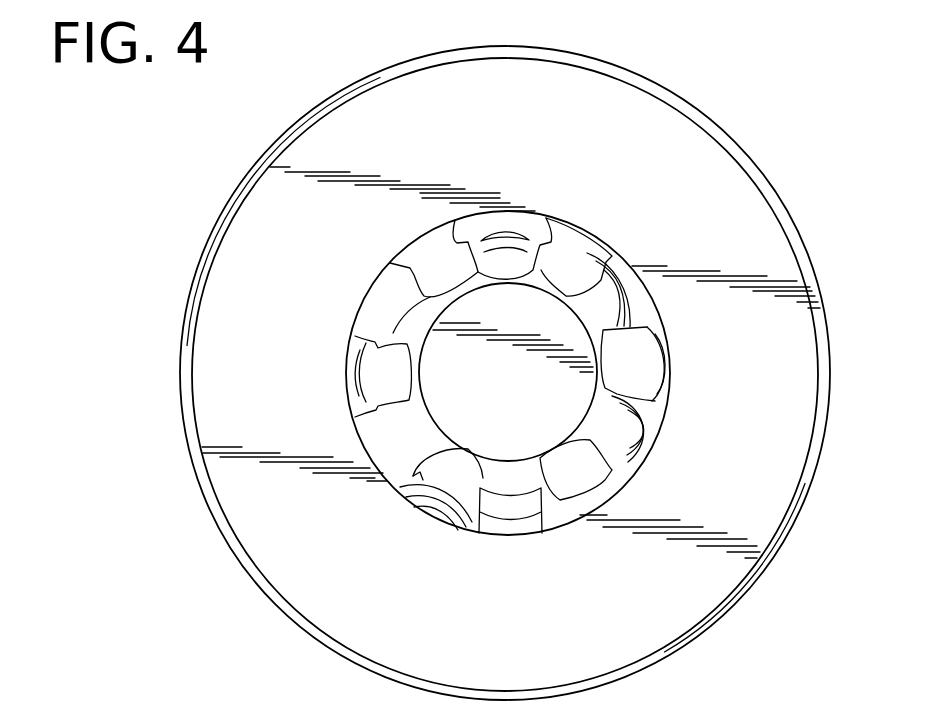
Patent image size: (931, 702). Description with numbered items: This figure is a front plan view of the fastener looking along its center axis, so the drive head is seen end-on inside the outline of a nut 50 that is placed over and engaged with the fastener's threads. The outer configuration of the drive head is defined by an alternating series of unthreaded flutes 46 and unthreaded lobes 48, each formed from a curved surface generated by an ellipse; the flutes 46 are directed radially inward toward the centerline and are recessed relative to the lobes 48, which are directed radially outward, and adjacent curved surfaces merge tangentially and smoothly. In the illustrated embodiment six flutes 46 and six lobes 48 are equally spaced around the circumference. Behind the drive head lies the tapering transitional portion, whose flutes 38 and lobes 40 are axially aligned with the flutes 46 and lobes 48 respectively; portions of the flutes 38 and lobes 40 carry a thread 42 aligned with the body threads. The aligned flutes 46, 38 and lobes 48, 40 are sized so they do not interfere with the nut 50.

The flute 38 is at (445, 475).
The lobe 40 is at (376, 446).
The thread 42 is at (527, 190).
The unthreaded flute 46 is at (393, 370).
The unthreaded lobe 48 is at (414, 315).
The nut 50 is at (763, 512).